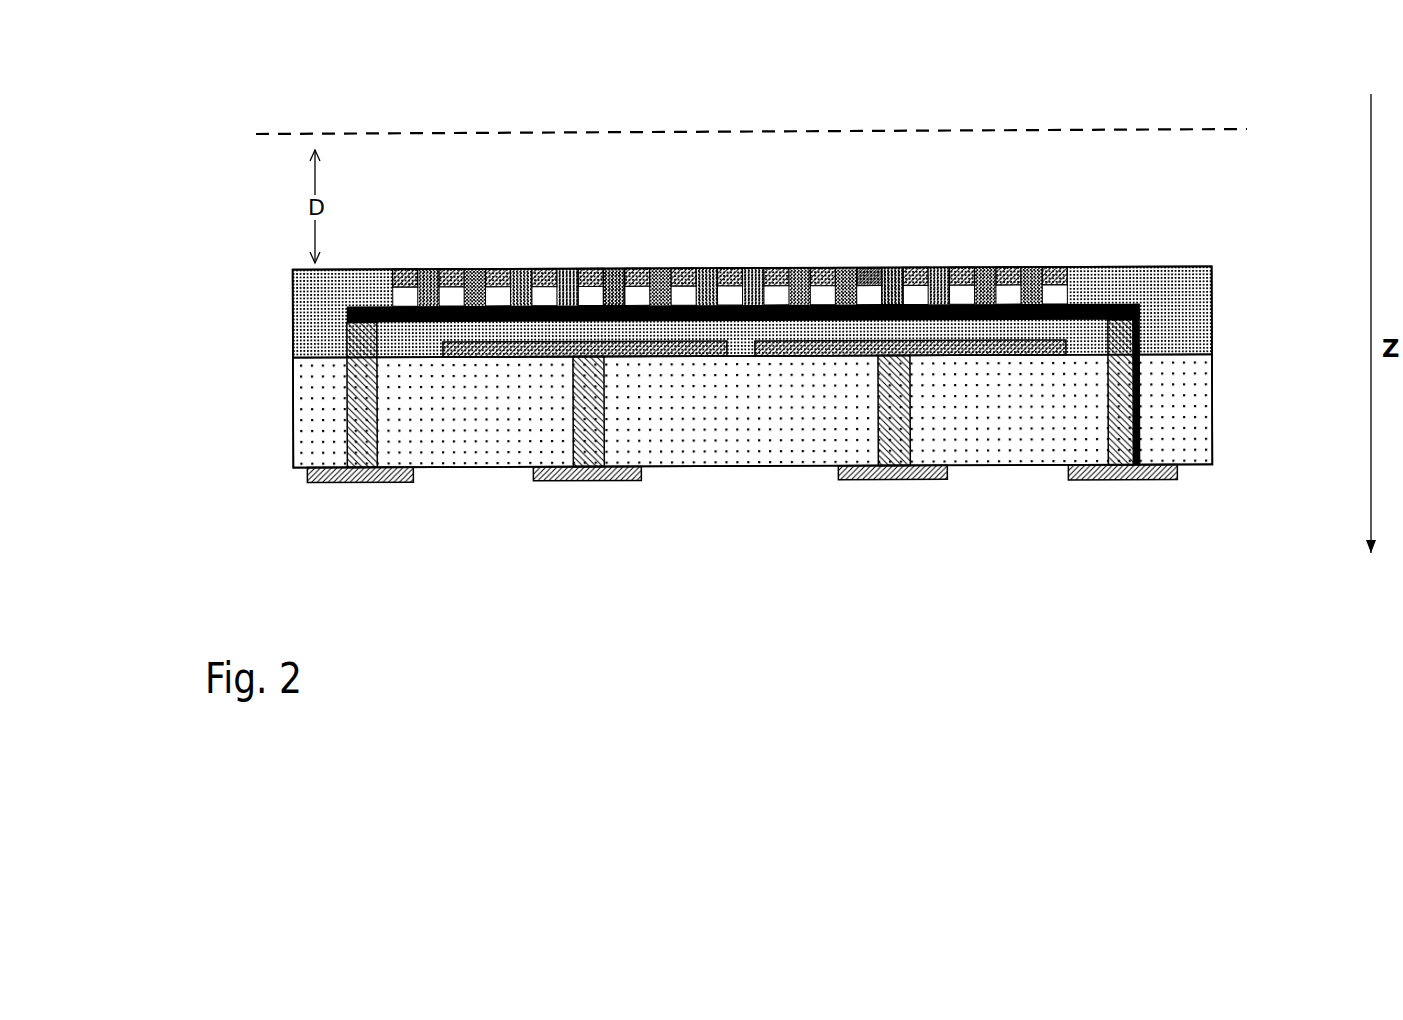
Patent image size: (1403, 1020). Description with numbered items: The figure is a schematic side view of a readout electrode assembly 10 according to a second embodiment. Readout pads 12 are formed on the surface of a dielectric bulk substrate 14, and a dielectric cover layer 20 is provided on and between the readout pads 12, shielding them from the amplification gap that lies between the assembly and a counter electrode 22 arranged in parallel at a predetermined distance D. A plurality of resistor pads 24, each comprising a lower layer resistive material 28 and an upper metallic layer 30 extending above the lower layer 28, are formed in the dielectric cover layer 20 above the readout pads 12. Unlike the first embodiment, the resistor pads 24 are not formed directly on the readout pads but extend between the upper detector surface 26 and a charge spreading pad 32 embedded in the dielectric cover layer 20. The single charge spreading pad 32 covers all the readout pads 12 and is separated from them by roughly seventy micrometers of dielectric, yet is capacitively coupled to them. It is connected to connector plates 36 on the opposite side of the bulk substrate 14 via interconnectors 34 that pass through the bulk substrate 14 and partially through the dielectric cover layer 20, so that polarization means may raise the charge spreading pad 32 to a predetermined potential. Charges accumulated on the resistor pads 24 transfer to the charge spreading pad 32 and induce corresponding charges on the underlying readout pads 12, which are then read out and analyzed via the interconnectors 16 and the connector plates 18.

The readout electrode assembly 10 is at (252, 262).
The readout pads 12 is at (695, 355).
The bulk substrate 14 is at (1188, 383).
The interconnectors 16 is at (590, 437).
The connector plates 18 is at (573, 478).
The dielectric cover layer 20 is at (760, 265).
The counter electrode 22 is at (420, 134).
The resistor pads 24 is at (895, 267).
The upper detector surface 26 is at (612, 265).
The lower layer resistive material 28 is at (857, 273).
The upper metallic layer 30 is at (870, 270).
The charge spreading pad 32 is at (1133, 300).
The interconnectors 34 is at (352, 413).
The connector plates 36 is at (329, 473).